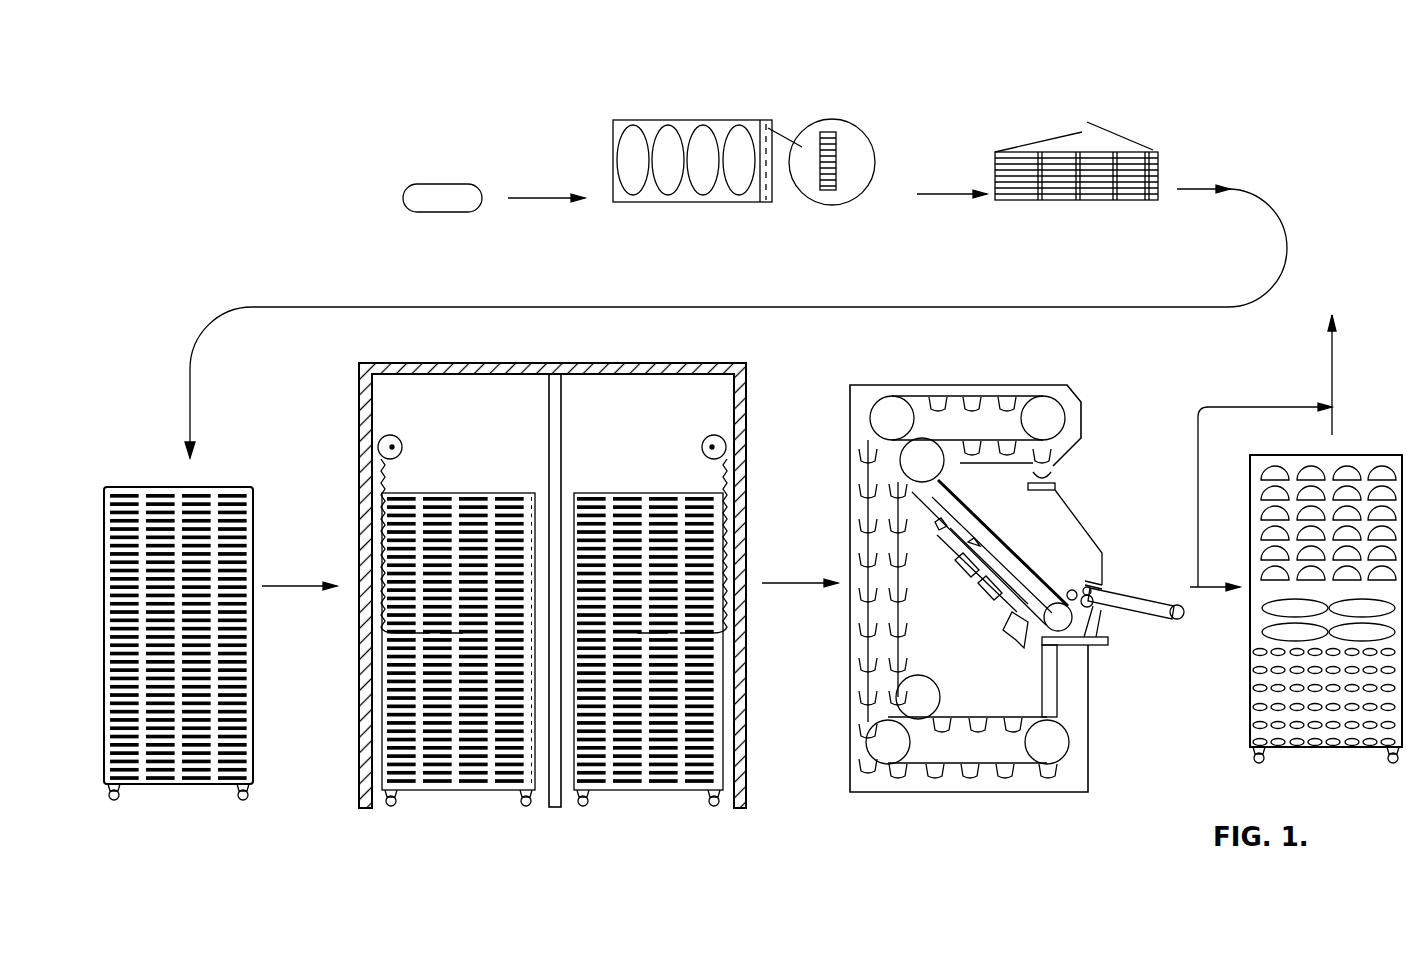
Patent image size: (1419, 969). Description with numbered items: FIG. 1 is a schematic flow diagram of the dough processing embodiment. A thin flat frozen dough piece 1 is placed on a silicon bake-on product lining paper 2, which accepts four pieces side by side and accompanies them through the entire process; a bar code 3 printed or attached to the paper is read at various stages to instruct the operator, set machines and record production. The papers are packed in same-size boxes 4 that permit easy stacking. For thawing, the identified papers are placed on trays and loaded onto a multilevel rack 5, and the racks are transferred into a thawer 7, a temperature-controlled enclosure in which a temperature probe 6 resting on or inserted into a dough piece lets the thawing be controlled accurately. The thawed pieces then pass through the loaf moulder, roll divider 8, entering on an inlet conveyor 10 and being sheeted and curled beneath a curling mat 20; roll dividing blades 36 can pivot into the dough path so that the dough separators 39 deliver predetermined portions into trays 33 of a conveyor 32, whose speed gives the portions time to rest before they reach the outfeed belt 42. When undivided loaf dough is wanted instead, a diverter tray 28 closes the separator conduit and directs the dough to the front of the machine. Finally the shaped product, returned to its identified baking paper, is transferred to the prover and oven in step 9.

The dough piece 1 is at (455, 214).
The product lining paper 2 is at (677, 207).
The bar code 3 is at (826, 195).
The boxes 4 is at (1075, 201).
The multilevel rack 5 is at (265, 512).
The temperature probe 6 is at (402, 447).
The thawer 7 is at (579, 585).
The loaf moulder, roll divider 8 is at (987, 597).
The prover and oven step 9 is at (1378, 452).
The inlet conveyor 10 is at (1133, 607).
The curling mat 20 is at (1000, 526).
The diverter tray 28 is at (1105, 646).
The conveyor 32 is at (1003, 400).
The trays 33 is at (938, 400).
The roll dividing blades 36 is at (1017, 633).
The dough separators 39 is at (1050, 700).
The outfeed belt 42 is at (1057, 487).